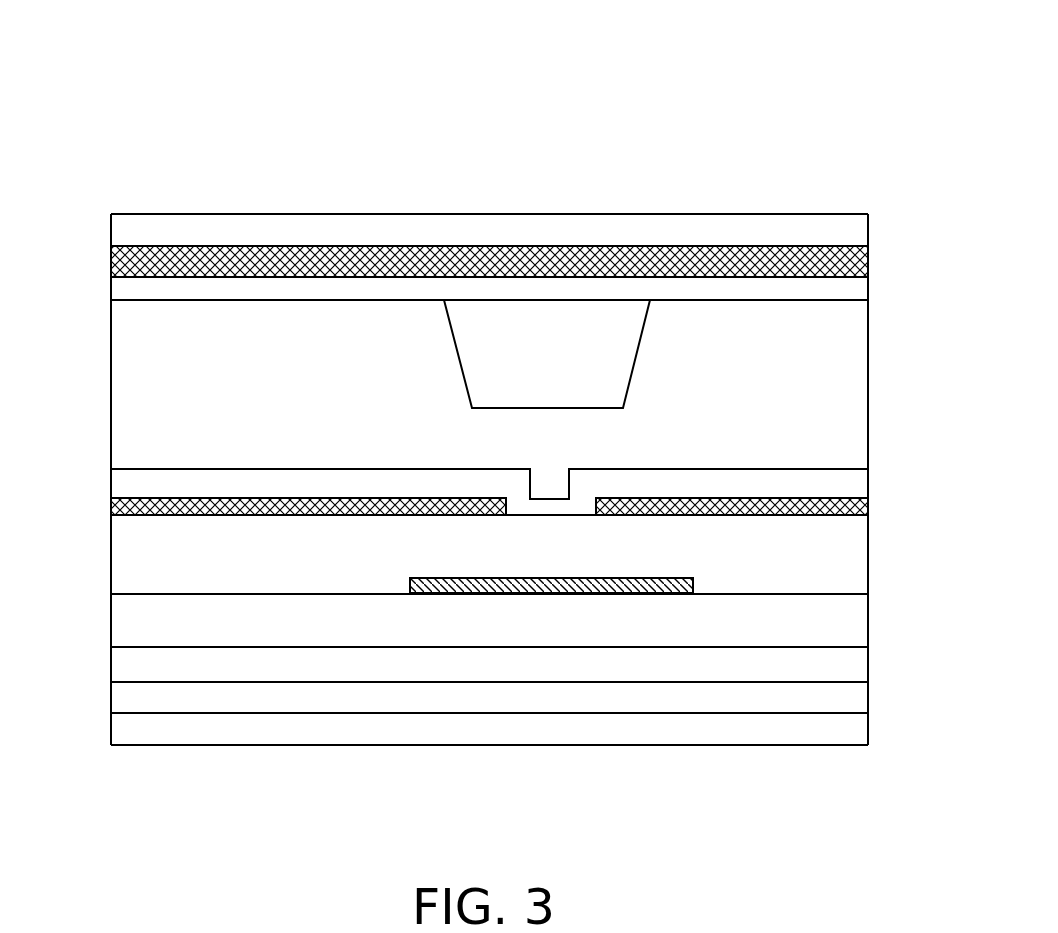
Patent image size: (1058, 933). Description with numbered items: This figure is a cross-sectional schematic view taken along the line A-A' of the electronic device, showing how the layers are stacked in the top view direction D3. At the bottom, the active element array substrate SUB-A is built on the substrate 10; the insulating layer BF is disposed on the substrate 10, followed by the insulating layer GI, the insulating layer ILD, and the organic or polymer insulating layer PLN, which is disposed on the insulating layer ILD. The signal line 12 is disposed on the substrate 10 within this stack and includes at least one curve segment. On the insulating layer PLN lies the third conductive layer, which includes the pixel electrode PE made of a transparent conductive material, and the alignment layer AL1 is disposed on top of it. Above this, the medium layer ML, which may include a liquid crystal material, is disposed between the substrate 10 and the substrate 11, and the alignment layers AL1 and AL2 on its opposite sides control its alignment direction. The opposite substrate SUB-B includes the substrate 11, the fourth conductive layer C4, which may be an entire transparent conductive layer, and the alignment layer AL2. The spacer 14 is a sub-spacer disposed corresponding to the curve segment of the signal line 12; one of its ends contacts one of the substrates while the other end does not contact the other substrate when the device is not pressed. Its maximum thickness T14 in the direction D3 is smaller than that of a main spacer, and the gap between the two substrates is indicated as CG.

The substrate 11 is at (862, 233).
The fourth conductive layer C4 is at (862, 263).
The alignment layer AL2 is at (862, 289).
The spacer 14 is at (623, 350).
The medium layer ML is at (862, 387).
The alignment layer AL1 is at (862, 483).
The pixel electrode PE is at (862, 512).
The insulating layer PLN is at (862, 562).
The signal line 12 is at (695, 583).
The insulating layer ILD is at (862, 627).
The insulating layer GI is at (862, 664).
The insulating layer BF is at (862, 701).
The substrate 10 is at (862, 735).
The active element array substrate SUB-A is at (106, 470).
The opposite substrate SUB-B is at (110, 214).
The cell gap CG is at (287, 302).
The maximum thickness T14 is at (533, 302).
The direction D3 is at (894, 128).
The line A-A' A is at (868, 784).